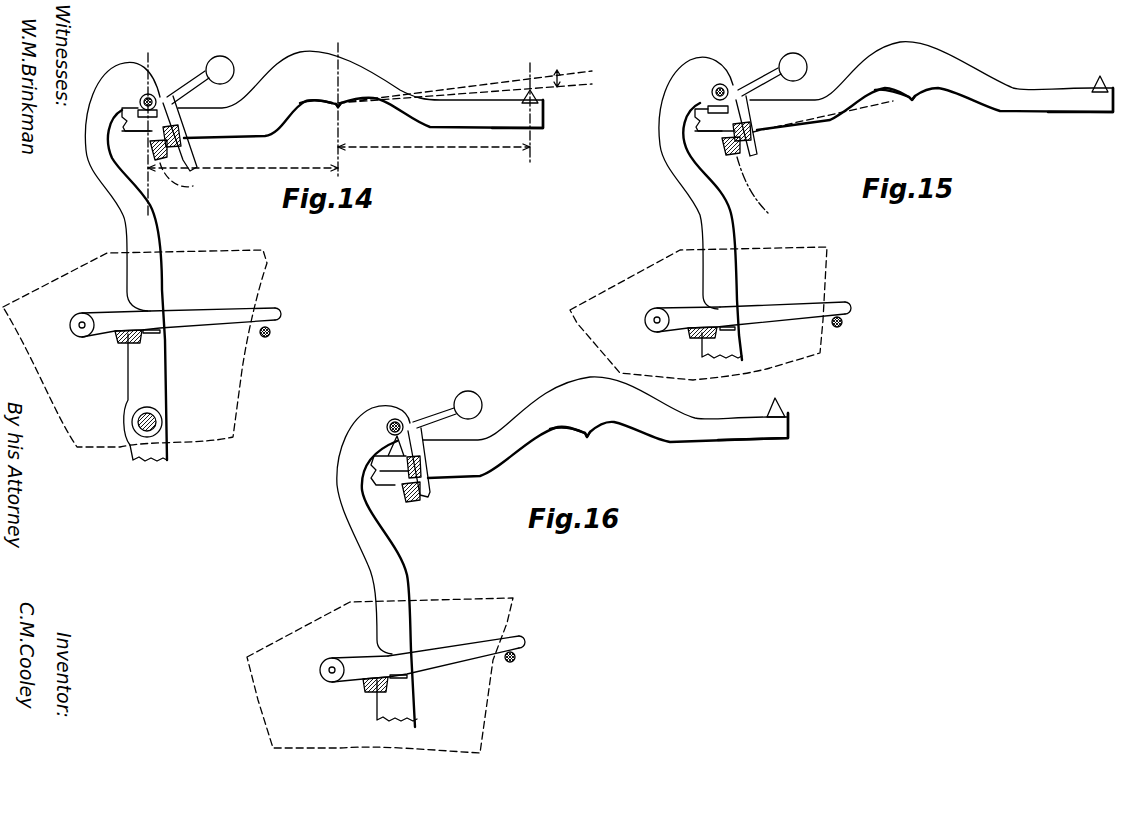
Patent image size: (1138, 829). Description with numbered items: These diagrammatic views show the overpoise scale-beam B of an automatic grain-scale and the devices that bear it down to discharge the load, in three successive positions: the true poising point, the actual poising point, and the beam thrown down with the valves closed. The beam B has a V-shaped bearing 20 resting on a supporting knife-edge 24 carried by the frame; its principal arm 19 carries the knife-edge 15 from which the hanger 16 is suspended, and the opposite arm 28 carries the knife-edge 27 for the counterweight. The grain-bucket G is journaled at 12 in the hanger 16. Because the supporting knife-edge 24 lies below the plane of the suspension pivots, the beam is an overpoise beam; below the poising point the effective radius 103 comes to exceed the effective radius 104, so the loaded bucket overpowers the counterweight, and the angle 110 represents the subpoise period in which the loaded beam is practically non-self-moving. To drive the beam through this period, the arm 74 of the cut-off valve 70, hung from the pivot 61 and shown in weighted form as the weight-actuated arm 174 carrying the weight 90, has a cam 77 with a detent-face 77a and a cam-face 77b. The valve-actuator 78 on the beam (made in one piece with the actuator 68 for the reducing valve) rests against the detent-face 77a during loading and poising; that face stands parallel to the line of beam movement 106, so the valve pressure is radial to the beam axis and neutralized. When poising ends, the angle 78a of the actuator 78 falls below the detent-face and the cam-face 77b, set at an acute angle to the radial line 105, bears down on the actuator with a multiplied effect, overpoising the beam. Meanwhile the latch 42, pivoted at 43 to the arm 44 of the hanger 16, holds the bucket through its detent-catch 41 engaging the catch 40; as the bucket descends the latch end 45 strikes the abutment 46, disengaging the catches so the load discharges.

In FIG. 14, the journal 12 is at (163, 421).
In FIG. 14, the pivot or knife-edge 15 is at (122, 108).
In FIG. 15, the pivot or knife-edge 15 is at (695, 113).
In FIG. 16, the pivot or knife-edge 15 is at (389, 458).
In FIG. 14, the hanger 16 is at (160, 372).
In FIG. 15, the hanger 16 is at (700, 205).
In FIG. 16, the hanger 16 is at (383, 581).
In FIG. 14, the principal arm of the scale-beam 19 is at (294, 105).
In FIG. 15, the principal arm of the scale-beam 19 is at (823, 118).
In FIG. 16, the principal arm of the scale-beam 19 is at (528, 443).
In FIG. 14, the V-shaped bearing 20 is at (333, 101).
In FIG. 15, the V-shaped bearing 20 is at (917, 94).
In FIG. 16, the V-shaped bearing 20 is at (587, 431).
In FIG. 14, the pivot or knife-edge 24 is at (340, 106).
In FIG. 15, the pivot or knife-edge 24 is at (911, 100).
In FIG. 16, the pivot or knife-edge 24 is at (586, 438).
In FIG. 14, the pivot or knife-edge 27 is at (538, 100).
In FIG. 15, the pivot or knife-edge 27 is at (1099, 82).
In FIG. 16, the pivot or knife-edge 27 is at (781, 403).
In FIG. 14, the arm 28 is at (492, 118).
In FIG. 15, the arm 28 is at (1048, 105).
In FIG. 16, the arm 28 is at (718, 432).
In FIG. 14, the catch 40 is at (118, 340).
In FIG. 15, the catch 40 is at (690, 340).
In FIG. 16, the catch 40 is at (367, 694).
In FIG. 14, the detent-catch 41 is at (160, 331).
In FIG. 15, the detent-catch 41 is at (733, 327).
In FIG. 16, the detent-catch 41 is at (407, 674).
In FIG. 14, the latch 42 is at (220, 311).
In FIG. 15, the latch 42 is at (783, 307).
In FIG. 16, the latch 42 is at (456, 649).
In FIG. 14, the latch pivot 43 is at (81, 328).
In FIG. 15, the latch pivot 43 is at (655, 323).
In FIG. 16, the latch pivot 43 is at (330, 673).
In FIG. 14, the arm of the hanger 44 is at (105, 313).
In FIG. 15, the arm of the hanger 44 is at (676, 308).
In FIG. 16, the arm of the hanger 44 is at (352, 657).
In FIG. 14, the end of the latch 45 is at (273, 310).
In FIG. 15, the end of the latch 45 is at (843, 304).
In FIG. 16, the end of the latch 45 is at (516, 638).
In FIG. 14, the stop or abutment 46 is at (270, 334).
In FIG. 15, the stop or abutment 46 is at (841, 325).
In FIG. 16, the stop or abutment 46 is at (515, 659).
In FIG. 14, the pivot 61 is at (142, 96).
In FIG. 15, the pivot 61 is at (715, 89).
In FIG. 16, the pivot 61 is at (395, 419).
In FIG. 14, the cam or valve-actuator 68 is at (150, 148).
In FIG. 15, the cam or valve-actuator 68 is at (723, 143).
In FIG. 16, the cam or valve-actuator 68 is at (403, 497).
In FIG. 14, the cut-off valve 70 is at (185, 183).
In FIG. 14, the arm of the cut-off valve 74 is at (176, 110).
In FIG. 15, the arm of the cut-off valve 74 is at (744, 106).
In FIG. 16, the arm of the cut-off valve 74 is at (413, 443).
In FIG. 14, the cam 77 is at (181, 131).
In FIG. 15, the cam 77 is at (750, 131).
In FIG. 16, the cam 77 is at (421, 470).
In FIG. 14, the detent-face 77a is at (122, 131).
In FIG. 15, the detent-face 77a is at (733, 128).
In FIG. 16, the detent-face 77a is at (380, 471).
In FIG. 14, the cam-face 77b is at (168, 165).
In FIG. 16, the cam-face 77b is at (400, 484).
In FIG. 14, the cam or valve-actuator 78 is at (155, 160).
In FIG. 15, the cam or valve-actuator 78 is at (733, 151).
In FIG. 16, the cam or valve-actuator 78 is at (419, 501).
In FIG. 14, the angle of the actuator 78a is at (148, 153).
In FIG. 15, the angle of the actuator 78a is at (723, 146).
In FIG. 16, the angle of the actuator 78a is at (413, 499).
In FIG. 14, the weight 90 is at (222, 66).
In FIG. 15, the weight 90 is at (797, 60).
In FIG. 16, the weight 90 is at (469, 400).
In FIG. 14, the effective radius 103 is at (243, 130).
In FIG. 14, the effective radius 104 is at (434, 113).
In FIG. 15, the radial line 105 is at (823, 115).
In FIG. 15, the line of the beam movement 106 is at (752, 184).
In FIG. 14, the angle 110 is at (560, 73).
In FIG. 14, the weight-actuated arm 174 is at (187, 87).
In FIG. 15, the weight-actuated arm 174 is at (760, 85).
In FIG. 16, the weight-actuated arm 174 is at (437, 418).
In FIG. 14, the scale-beam B is at (397, 82).
In FIG. 15, the scale-beam B is at (995, 87).
In FIG. 16, the scale-beam B is at (550, 395).
In FIG. 14, the grain-bucket G is at (68, 278).
In FIG. 15, the grain-bucket G is at (637, 278).
In FIG. 16, the grain-bucket G is at (313, 625).